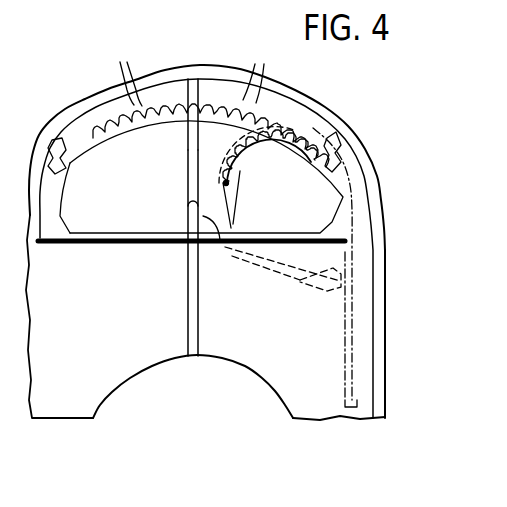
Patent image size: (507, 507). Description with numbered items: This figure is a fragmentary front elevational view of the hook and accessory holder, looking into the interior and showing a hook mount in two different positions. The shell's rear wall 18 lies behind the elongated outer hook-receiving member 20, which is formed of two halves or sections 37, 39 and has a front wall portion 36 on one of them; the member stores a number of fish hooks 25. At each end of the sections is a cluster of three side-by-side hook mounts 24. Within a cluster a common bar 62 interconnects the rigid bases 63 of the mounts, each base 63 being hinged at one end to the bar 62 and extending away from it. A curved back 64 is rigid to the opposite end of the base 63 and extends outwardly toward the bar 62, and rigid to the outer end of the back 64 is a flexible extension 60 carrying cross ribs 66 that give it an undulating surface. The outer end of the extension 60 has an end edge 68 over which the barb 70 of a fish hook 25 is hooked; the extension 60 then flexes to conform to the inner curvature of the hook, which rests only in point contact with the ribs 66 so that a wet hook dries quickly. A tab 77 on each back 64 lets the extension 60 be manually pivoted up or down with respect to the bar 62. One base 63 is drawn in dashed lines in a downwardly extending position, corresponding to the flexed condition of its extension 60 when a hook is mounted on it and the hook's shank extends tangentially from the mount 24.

The rear wall 18 is at (386, 337).
The outer hook-receiving member 20 is at (37, 139).
The hook mount 24 is at (94, 124).
The fish hook 25 is at (353, 216).
The front wall portion 36 is at (386, 415).
The section 37 is at (111, 400).
The section 39 is at (246, 373).
The flexible extension 60 is at (117, 139).
The common bar 62 is at (188, 206).
The base 63 is at (291, 233).
The curved back 64 is at (74, 177).
The cross ribs 66 is at (189, 70).
The end edge 68 is at (188, 123).
The barb 70 is at (243, 169).
The tab 77 is at (74, 158).